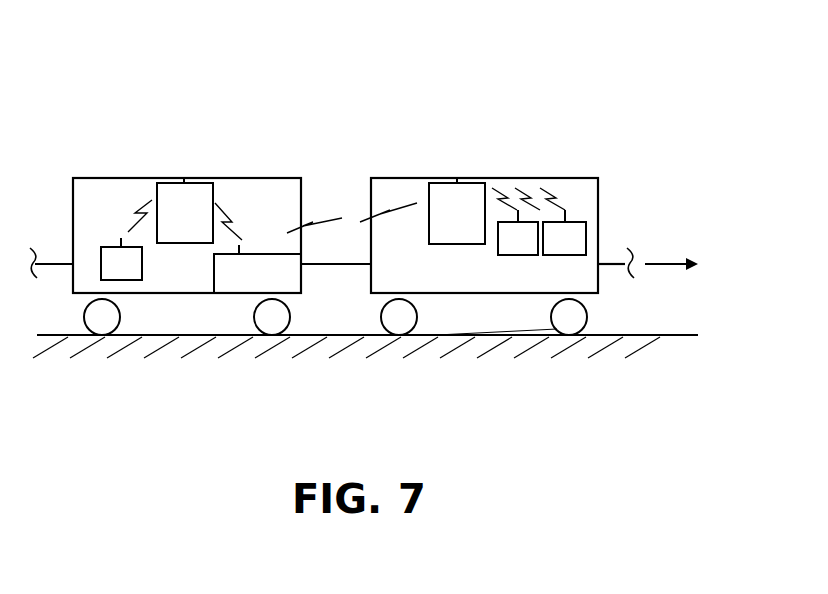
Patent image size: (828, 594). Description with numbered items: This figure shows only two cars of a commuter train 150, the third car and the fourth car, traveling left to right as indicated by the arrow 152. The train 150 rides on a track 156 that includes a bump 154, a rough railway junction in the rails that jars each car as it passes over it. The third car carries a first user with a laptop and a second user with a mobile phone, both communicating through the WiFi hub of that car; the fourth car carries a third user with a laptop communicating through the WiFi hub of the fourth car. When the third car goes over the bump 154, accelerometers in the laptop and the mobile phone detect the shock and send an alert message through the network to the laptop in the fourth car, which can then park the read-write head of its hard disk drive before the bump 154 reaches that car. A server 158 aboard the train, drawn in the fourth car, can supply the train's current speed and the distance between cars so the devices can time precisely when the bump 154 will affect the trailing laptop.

The train 150 is at (172, 80).
The arrow 152 is at (670, 265).
The bump 154 is at (557, 330).
The track 156 is at (208, 338).
The server 158 is at (268, 253).